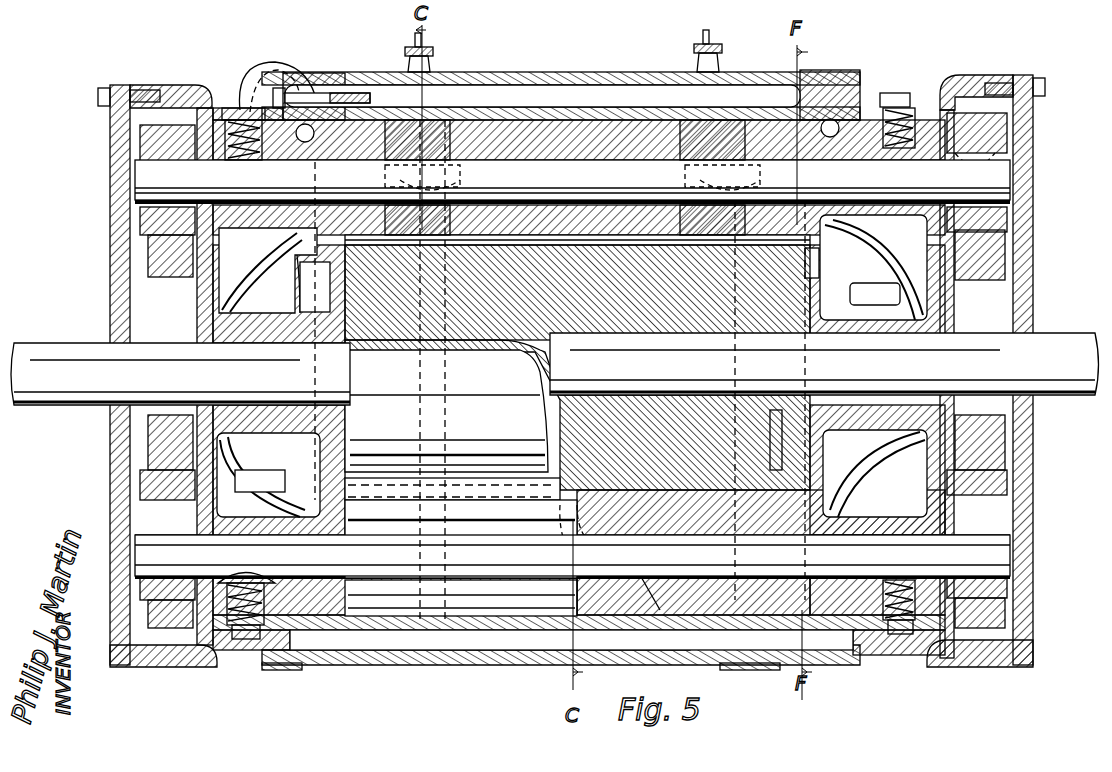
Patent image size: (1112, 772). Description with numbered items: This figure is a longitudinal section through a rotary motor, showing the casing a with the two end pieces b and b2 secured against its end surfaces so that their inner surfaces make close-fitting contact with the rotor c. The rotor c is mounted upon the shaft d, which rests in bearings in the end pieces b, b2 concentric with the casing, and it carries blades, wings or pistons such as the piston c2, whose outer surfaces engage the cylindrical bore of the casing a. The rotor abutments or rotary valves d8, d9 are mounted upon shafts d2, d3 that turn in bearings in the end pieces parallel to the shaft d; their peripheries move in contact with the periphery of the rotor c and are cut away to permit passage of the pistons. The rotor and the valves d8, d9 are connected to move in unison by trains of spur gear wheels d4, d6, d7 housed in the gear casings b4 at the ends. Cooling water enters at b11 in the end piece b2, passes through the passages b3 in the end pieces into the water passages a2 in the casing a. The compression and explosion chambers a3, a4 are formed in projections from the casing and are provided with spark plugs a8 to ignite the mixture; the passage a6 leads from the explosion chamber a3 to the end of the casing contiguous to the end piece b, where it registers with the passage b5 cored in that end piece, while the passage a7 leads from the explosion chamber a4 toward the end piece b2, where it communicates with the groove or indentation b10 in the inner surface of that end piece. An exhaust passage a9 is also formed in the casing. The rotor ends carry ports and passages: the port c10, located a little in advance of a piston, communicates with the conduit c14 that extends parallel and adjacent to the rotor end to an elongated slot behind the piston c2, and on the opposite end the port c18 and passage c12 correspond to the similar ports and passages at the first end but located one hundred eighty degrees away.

The casing a is at (561, 366).
The water passages a2 is at (569, 366).
The explosion chamber a3 is at (648, 85).
The explosion chamber a4 is at (477, 115).
The passage a6 is at (555, 479).
The passage a7 is at (400, 355).
The spark plugs a8 is at (405, 58).
The exhaust passage a9 is at (545, 548).
The end piece b is at (899, 82).
The end piece b2 is at (239, 85).
The water passages b3 is at (572, 366).
The gear casings b4 is at (158, 86).
The passage b5 is at (835, 285).
The groove b10 is at (300, 282).
The water inlet b11 is at (282, 68).
The rotor c is at (662, 320).
The piston c2 is at (452, 491).
The port c10 is at (850, 295).
The passage c12 is at (350, 300).
The passage c14 is at (780, 462).
The port c18 is at (325, 478).
The shaft d is at (572, 387).
The valve shaft d2 is at (693, 576).
The valve shaft d3 is at (572, 367).
The spur gear wheel d4 is at (165, 305).
The spur gear wheel d6 is at (140, 152).
The spur gear wheel d7 is at (150, 540).
The rotary valve d8 is at (650, 600).
The rotary valve d9 is at (545, 150).